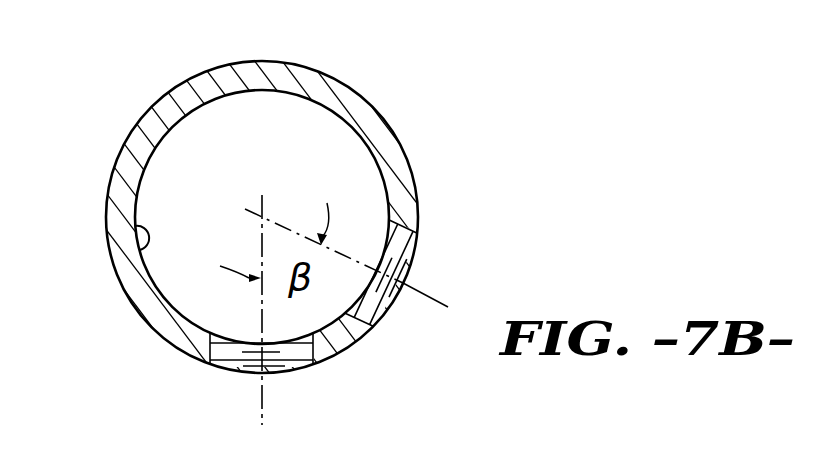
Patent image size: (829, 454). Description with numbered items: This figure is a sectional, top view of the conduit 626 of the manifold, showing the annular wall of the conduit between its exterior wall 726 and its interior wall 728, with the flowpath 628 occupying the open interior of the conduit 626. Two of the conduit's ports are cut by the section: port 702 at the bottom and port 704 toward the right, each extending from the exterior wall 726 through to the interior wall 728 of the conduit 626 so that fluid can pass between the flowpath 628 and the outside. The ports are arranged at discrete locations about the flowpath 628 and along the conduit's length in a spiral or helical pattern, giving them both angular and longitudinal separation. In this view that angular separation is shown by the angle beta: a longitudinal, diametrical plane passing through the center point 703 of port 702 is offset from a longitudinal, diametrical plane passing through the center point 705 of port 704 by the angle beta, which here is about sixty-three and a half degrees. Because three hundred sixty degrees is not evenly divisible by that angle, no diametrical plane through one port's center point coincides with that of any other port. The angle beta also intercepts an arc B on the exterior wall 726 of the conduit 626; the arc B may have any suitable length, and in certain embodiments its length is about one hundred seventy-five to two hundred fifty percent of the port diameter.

The conduit 626 is at (310, 202).
The flowpath 628 is at (290, 156).
The port 702 is at (232, 362).
The center point of port 702 703 is at (260, 372).
The port 704 is at (413, 253).
The center point of port 704 705 is at (408, 287).
The exterior wall 726 is at (163, 99).
The interior wall 728 is at (140, 254).
The arc B is at (345, 350).